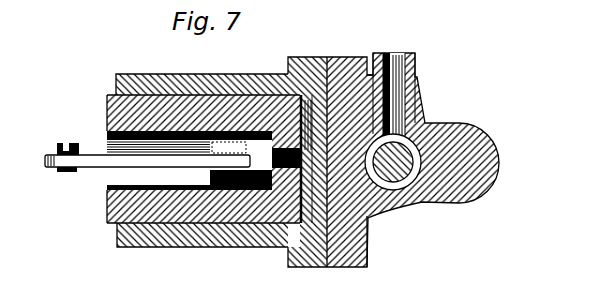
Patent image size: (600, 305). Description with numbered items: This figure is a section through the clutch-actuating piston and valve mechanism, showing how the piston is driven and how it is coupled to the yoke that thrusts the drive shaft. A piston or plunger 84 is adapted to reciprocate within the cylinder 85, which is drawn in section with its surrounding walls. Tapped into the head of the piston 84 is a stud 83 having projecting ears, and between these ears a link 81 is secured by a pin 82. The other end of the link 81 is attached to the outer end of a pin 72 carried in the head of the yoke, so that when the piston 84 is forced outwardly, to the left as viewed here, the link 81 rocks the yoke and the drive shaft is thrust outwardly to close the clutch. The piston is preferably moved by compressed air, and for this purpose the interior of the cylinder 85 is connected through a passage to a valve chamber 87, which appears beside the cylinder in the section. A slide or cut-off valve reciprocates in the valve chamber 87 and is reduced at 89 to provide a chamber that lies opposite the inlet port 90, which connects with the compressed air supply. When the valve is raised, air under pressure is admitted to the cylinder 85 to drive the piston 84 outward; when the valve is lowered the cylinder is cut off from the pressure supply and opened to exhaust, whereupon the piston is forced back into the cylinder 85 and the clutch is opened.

The pin 72 is at (59, 143).
The link 81 is at (86, 163).
The pin 82 is at (205, 180).
The stud 83 is at (250, 132).
The piston 84 is at (183, 112).
The cylinder 85 is at (203, 82).
The valve chamber 87 is at (424, 104).
The reduced part of valve 89 is at (402, 178).
The inlet port 90 is at (415, 78).